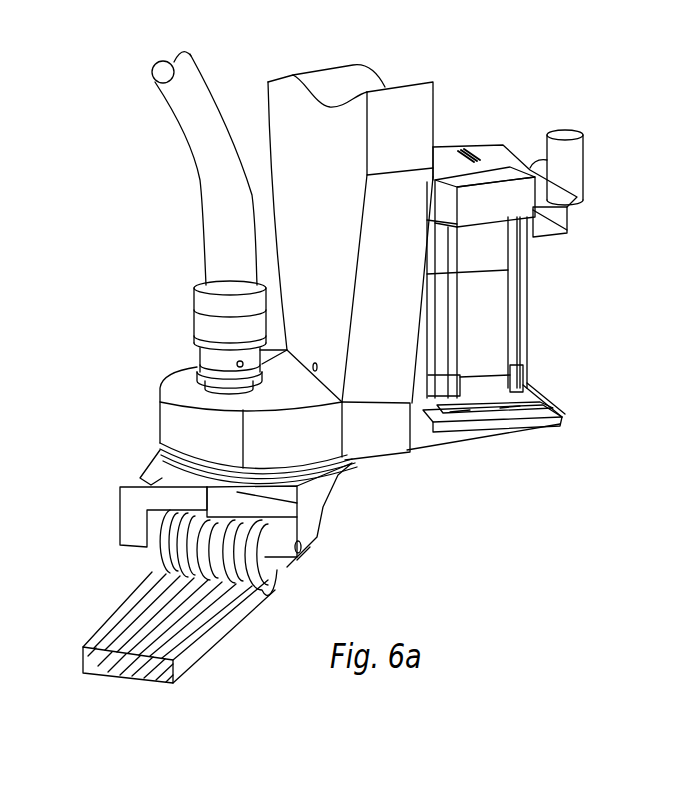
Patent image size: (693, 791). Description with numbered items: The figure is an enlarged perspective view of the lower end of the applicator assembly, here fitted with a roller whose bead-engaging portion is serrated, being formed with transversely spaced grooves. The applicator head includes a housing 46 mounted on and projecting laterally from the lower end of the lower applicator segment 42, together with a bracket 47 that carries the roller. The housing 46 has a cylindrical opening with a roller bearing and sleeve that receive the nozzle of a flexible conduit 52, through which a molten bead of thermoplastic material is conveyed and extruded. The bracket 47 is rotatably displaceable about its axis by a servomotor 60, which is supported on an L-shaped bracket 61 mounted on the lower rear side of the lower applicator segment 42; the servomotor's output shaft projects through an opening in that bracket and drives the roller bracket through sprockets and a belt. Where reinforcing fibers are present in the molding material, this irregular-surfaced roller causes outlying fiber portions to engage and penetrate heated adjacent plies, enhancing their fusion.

The lower applicator segment 42 is at (435, 107).
The housing 46 is at (160, 413).
The bracket 47 is at (313, 537).
The flexible conduit 52 is at (203, 224).
The servomotor 60 is at (527, 300).
The L-shaped bracket 61 is at (543, 425).